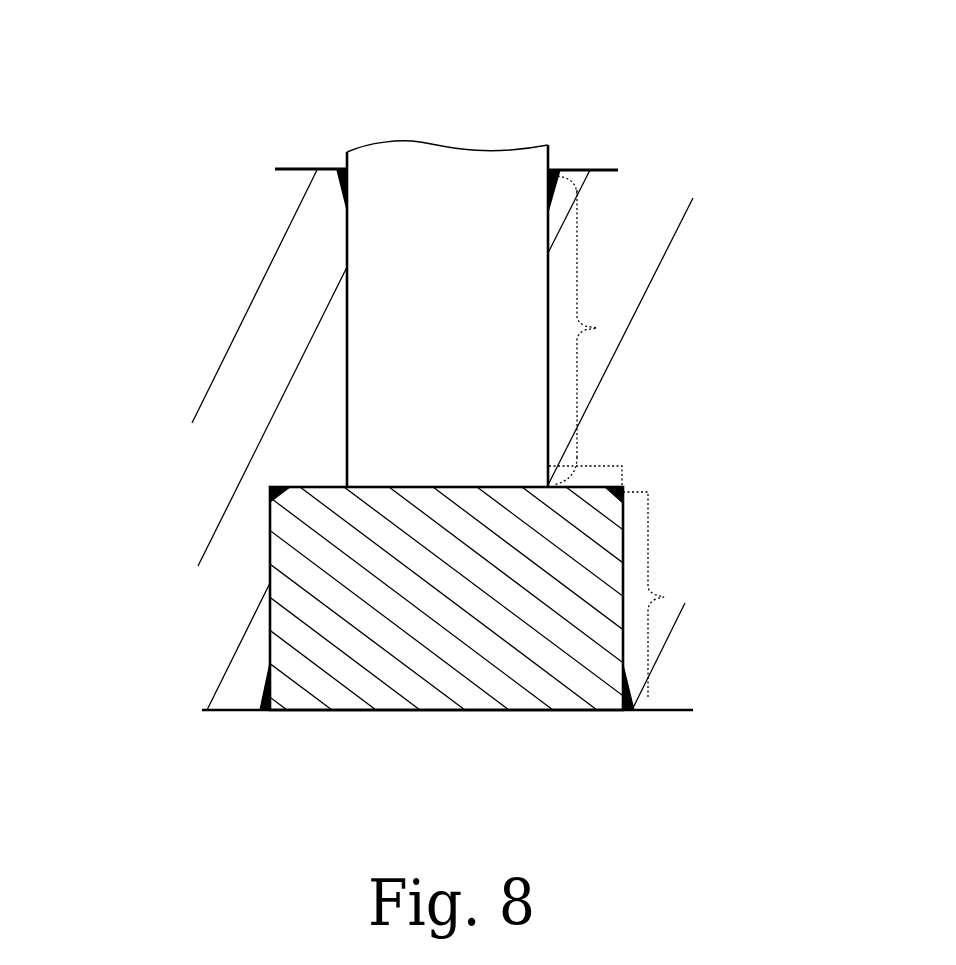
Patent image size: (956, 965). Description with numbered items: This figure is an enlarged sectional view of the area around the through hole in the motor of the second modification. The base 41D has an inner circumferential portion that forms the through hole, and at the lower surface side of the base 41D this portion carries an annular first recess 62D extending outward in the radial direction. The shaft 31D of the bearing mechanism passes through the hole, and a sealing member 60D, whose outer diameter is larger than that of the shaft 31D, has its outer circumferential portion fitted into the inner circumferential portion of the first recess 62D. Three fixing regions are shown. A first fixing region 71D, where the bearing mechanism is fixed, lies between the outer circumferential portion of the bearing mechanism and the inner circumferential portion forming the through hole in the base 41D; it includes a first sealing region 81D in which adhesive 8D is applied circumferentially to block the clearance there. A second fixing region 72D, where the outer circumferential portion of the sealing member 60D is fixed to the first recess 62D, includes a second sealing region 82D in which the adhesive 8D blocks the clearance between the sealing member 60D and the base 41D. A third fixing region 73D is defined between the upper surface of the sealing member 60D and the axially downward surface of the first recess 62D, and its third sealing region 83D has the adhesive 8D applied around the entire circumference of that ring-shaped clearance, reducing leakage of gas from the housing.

The shaft 31D is at (471, 194).
The base 41D is at (232, 590).
The sealing member 60D is at (478, 697).
The first recess 62D is at (595, 627).
The adhesive 8D is at (553, 171).
The first sealing region 81D is at (560, 192).
The first fixing region 71D is at (607, 329).
The third fixing region 73D is at (588, 443).
The third sealing region 83D is at (617, 487).
The second fixing region 72D is at (673, 597).
The second sealing region 82D is at (628, 681).